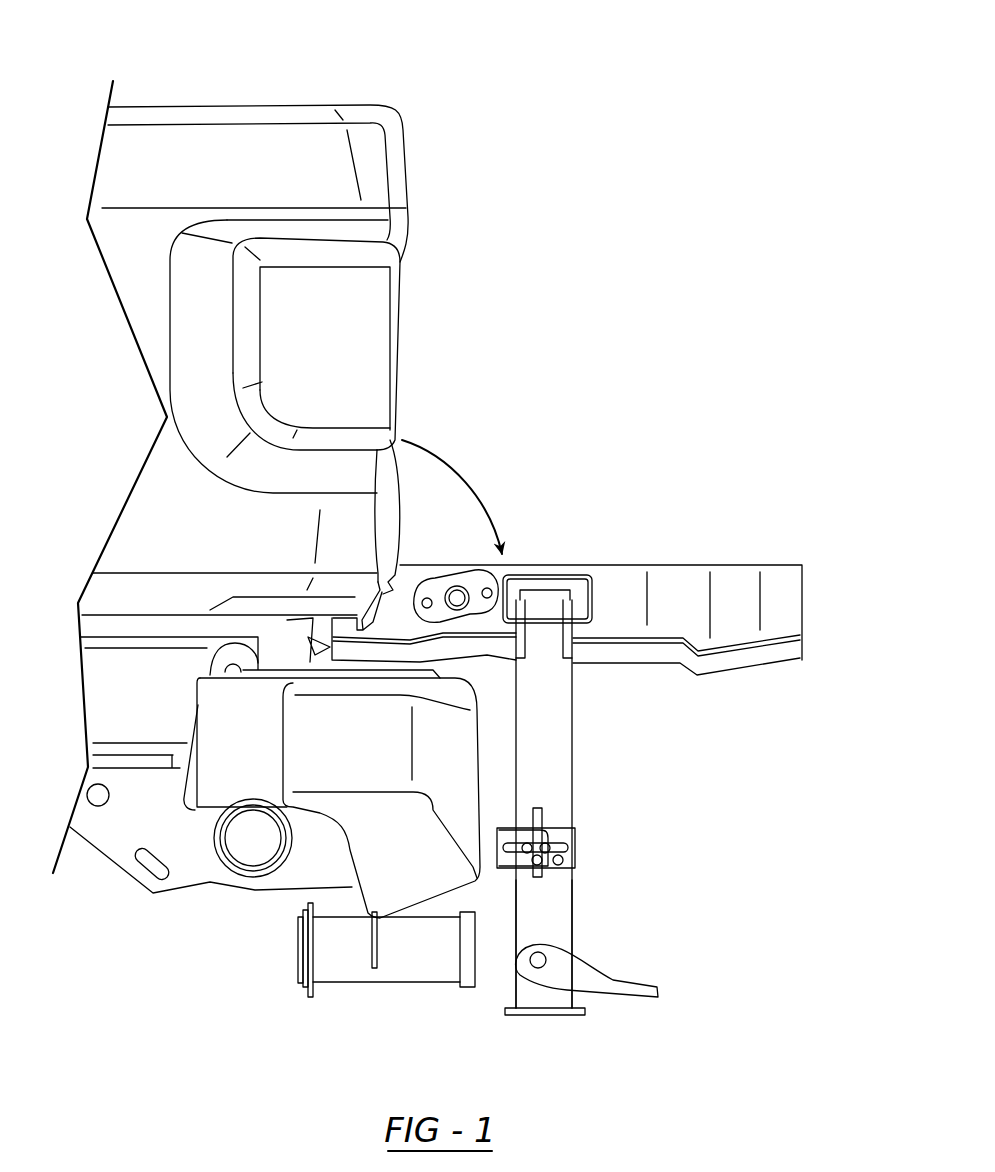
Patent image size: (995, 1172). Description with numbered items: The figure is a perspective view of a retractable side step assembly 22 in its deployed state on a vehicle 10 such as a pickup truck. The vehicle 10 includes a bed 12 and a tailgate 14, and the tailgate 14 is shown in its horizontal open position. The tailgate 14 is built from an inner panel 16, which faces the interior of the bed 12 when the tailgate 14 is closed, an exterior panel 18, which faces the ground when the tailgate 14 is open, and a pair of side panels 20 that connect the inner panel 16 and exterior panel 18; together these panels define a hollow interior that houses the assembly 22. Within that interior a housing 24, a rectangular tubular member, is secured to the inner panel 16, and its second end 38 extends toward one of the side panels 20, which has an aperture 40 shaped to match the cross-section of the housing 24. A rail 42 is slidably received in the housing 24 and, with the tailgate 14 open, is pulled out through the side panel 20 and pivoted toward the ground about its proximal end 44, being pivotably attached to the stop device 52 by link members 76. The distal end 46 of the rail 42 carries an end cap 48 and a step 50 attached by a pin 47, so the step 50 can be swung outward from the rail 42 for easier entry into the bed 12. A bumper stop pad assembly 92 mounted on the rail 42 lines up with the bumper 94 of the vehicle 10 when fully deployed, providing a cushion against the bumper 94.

The vehicle 10 is at (474, 141).
The bed 12 is at (193, 102).
The tailgate 14 is at (761, 542).
The inner panel 16 is at (662, 565).
The exterior panel 18 is at (747, 668).
The side panels 20 is at (773, 623).
The retractable side step assembly 22 is at (674, 764).
The housing 24 is at (522, 576).
The second end 38 is at (567, 575).
The aperture 40 is at (598, 595).
The rail 42 is at (570, 773).
The proximal end 44 is at (520, 677).
The distal end 46 is at (572, 907).
The pin 47 is at (535, 965).
The end cap 48 is at (585, 1010).
The step 50 is at (613, 980).
The stop device 52 is at (555, 628).
The link members 76 is at (513, 632).
The bumper stop pad assembly 92 is at (589, 829).
The bumper 94 is at (478, 877).